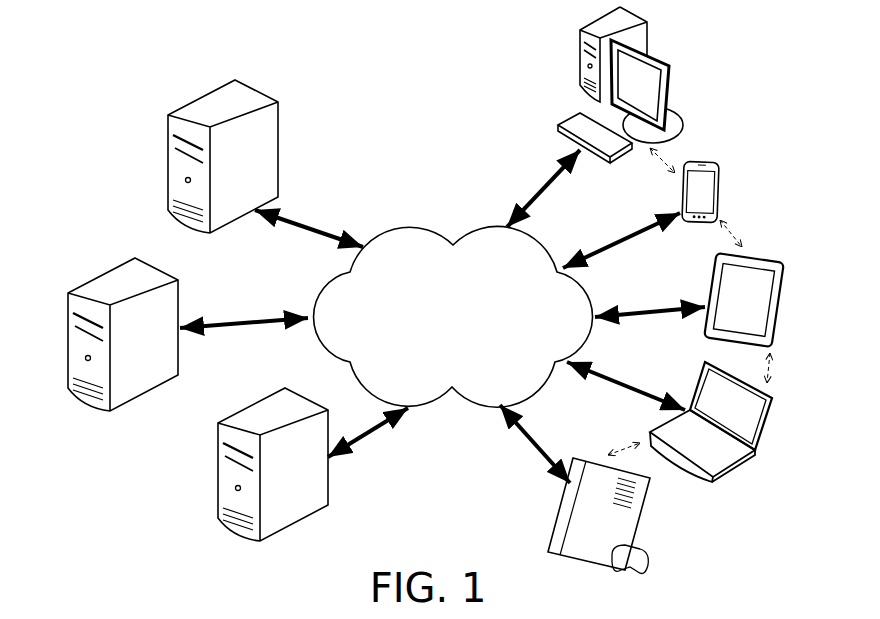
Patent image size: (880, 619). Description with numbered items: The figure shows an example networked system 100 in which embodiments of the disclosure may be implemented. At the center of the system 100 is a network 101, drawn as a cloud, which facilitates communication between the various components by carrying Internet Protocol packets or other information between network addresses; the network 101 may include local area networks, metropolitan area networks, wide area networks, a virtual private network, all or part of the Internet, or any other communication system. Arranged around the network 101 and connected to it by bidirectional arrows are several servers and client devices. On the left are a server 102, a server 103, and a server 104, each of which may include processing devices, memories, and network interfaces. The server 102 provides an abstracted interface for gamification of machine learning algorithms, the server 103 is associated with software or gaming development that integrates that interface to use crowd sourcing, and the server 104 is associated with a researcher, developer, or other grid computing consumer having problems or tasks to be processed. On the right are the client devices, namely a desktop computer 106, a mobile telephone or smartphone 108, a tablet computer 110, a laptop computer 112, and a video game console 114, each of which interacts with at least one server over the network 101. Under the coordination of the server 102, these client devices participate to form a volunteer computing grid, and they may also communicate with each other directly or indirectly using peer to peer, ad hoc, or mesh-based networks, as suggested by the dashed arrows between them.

The networked system 100 is at (350, 83).
The network 101 is at (453, 242).
The server 102 is at (90, 282).
The server 103 is at (183, 112).
The server 104 is at (240, 412).
The desktop computer 106 is at (580, 58).
The mobile telephone or smartphone 108 is at (718, 177).
The tablet computer 110 is at (780, 307).
The laptop computer 112 is at (757, 455).
The video game console 114 is at (650, 485).